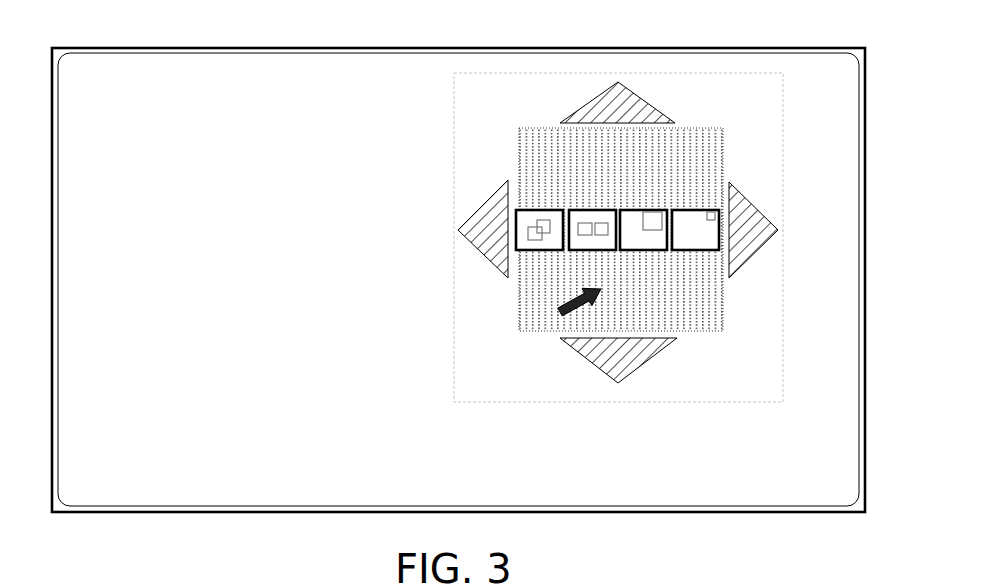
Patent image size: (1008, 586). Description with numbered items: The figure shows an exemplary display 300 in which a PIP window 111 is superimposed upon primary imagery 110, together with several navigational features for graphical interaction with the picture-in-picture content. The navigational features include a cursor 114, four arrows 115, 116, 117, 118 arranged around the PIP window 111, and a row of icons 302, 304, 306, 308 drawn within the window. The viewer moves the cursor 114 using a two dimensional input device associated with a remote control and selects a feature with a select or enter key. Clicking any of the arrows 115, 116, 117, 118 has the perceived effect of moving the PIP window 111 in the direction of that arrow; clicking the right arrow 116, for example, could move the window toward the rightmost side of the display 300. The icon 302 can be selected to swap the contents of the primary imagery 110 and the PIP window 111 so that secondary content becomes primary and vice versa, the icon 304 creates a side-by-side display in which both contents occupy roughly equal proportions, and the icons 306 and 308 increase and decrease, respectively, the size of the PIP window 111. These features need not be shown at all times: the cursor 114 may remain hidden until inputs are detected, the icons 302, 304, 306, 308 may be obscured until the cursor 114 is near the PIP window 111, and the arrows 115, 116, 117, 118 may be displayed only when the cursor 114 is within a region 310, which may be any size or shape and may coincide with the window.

The display 300 is at (740, 26).
The primary imagery 110 is at (132, 98).
The PIP window 111 is at (717, 320).
The cursor 114 is at (563, 313).
The arrow 115 is at (483, 228).
The right arrow 116 is at (755, 237).
The arrow 117 is at (583, 113).
The arrow 118 is at (640, 358).
The icon 302 is at (530, 250).
The icon 304 is at (588, 217).
The icon 306 is at (638, 250).
The icon 308 is at (697, 217).
The region 310 is at (557, 402).